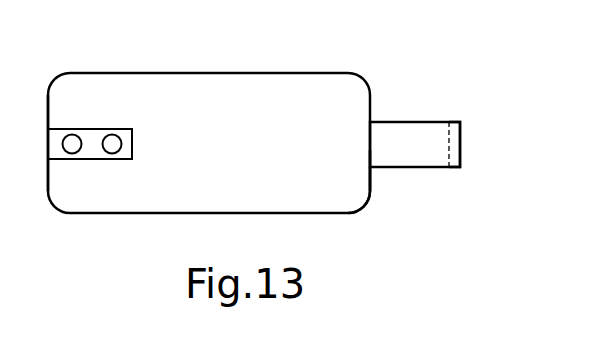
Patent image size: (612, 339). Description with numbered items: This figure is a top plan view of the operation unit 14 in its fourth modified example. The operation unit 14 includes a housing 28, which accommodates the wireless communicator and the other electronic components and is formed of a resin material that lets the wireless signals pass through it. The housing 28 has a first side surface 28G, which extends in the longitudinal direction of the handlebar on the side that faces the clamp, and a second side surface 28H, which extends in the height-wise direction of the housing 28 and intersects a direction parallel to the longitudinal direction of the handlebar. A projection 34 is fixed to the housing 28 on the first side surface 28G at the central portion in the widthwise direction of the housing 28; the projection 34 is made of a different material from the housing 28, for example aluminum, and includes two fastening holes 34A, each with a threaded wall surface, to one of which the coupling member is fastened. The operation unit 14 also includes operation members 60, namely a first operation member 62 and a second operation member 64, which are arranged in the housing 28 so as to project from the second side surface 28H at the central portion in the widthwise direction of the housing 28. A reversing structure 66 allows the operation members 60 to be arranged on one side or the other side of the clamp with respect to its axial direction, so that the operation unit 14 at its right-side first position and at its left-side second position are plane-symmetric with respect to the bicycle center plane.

The operation unit 14 is at (493, 79).
The housing 28 is at (175, 73).
The first side surface 28G is at (218, 213).
The second side surface 28H is at (371, 191).
The projection 34 is at (133, 145).
The fastening holes 34A is at (108, 134).
The operation members 60 is at (540, 142).
The first operation member 62 is at (461, 152).
The second operation member 64 is at (462, 132).
The reversing structure 66 is at (477, 224).